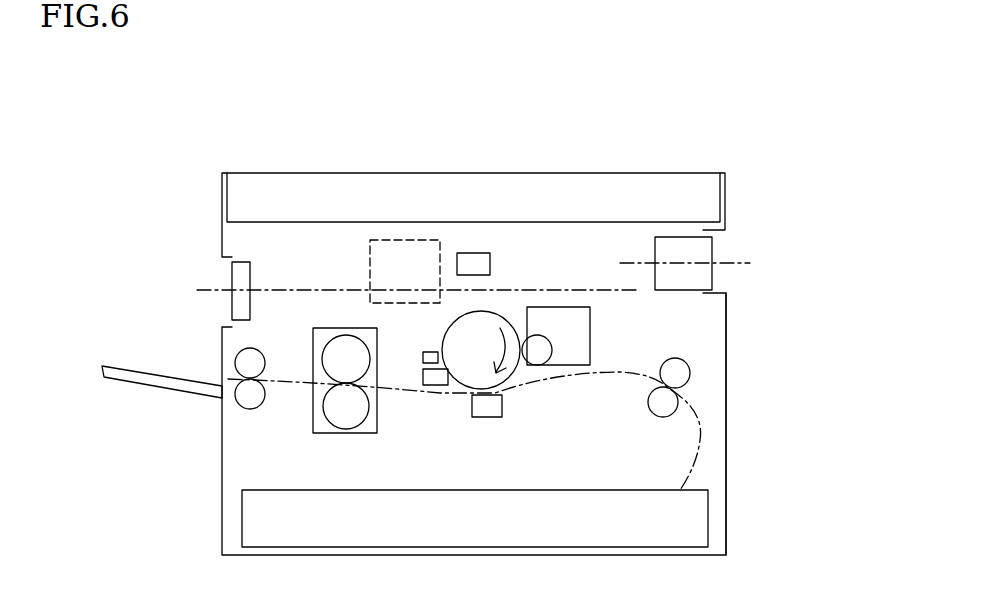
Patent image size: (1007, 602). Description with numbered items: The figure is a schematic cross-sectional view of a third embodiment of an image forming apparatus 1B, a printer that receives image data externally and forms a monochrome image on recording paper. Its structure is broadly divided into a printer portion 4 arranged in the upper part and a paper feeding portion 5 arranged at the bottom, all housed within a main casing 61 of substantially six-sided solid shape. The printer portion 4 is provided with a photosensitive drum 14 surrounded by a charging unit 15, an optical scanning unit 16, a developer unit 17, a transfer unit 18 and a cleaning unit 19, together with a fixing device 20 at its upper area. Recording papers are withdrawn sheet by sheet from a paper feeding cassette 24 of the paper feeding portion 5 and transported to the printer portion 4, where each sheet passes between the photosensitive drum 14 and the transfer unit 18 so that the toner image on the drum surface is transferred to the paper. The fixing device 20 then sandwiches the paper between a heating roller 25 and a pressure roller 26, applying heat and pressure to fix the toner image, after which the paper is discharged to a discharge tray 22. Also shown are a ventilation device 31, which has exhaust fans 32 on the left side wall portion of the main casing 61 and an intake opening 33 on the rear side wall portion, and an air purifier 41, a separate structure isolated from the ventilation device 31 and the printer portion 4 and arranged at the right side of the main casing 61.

The image forming apparatus 1B is at (501, 91).
The printer portion 4 is at (693, 341).
The paper feeding portion 5 is at (222, 508).
The photosensitive drum 14 is at (517, 373).
The charging unit 15 is at (423, 357).
The optical scanning unit 16 is at (477, 253).
The developer unit 17 is at (592, 338).
The transfer unit 18 is at (483, 420).
The cleaning unit 19 is at (420, 386).
The fixing device 20 is at (352, 435).
The discharge tray 22 is at (138, 370).
The paper feeding cassette 24 is at (597, 502).
The heating roller 25 is at (341, 345).
The pressure roller 26 is at (335, 410).
The ventilation device 31 is at (367, 106).
The exhaust fans 32 is at (241, 262).
The intake opening 33 is at (387, 240).
The air purifier 41 is at (713, 250).
The main casing 61 is at (727, 453).